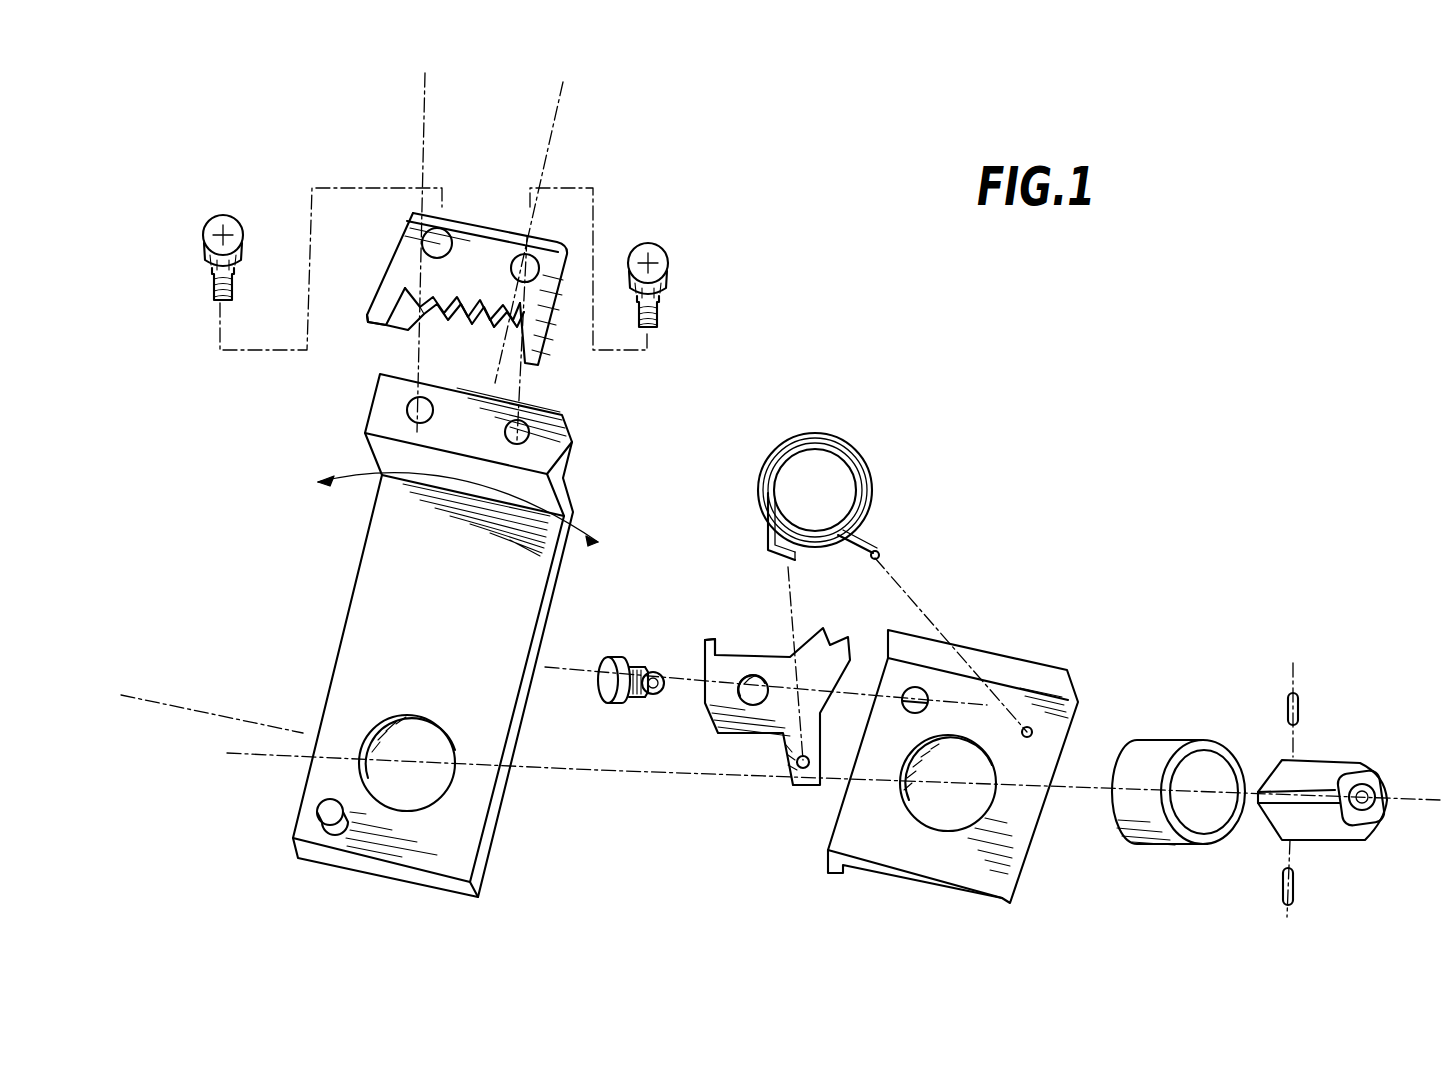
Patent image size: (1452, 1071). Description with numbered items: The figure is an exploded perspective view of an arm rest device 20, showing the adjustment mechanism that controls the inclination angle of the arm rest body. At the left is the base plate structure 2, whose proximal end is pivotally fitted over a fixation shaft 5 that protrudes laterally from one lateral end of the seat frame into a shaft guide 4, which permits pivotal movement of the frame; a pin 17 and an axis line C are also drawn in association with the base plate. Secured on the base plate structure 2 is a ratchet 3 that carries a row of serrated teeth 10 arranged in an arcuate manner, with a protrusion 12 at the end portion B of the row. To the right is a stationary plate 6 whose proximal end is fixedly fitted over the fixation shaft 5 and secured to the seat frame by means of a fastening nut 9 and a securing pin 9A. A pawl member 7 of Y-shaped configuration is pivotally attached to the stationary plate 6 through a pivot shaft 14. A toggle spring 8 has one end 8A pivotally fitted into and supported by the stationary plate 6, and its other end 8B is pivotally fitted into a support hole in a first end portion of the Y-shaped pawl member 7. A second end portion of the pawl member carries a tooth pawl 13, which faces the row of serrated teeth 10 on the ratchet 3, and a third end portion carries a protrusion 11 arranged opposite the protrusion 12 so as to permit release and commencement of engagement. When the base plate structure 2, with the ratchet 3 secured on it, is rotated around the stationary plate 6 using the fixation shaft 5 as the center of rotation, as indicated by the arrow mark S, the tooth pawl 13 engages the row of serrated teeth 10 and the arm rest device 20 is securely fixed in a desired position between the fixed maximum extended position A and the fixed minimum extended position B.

The base plate structure 2 is at (394, 635).
The ratchet 3 is at (480, 280).
The shaft guide 4 is at (1217, 752).
The fixation shaft 5 is at (1337, 783).
The stationary plate 6 is at (1023, 705).
The pawl member 7 is at (857, 667).
The toggle spring 8 is at (854, 492).
The one end of toggle spring 8A is at (875, 543).
The other end of toggle spring 8B is at (795, 558).
The fastening nut 9 is at (1372, 820).
The securing pin 9A is at (1298, 702).
The row of serrated teeth 10 is at (457, 290).
The protrusion 11 is at (712, 640).
The protrusion 12 is at (380, 327).
The tooth pawl 13 is at (855, 647).
The pivot shaft 14 is at (612, 657).
The pin 17 is at (322, 815).
The arm rest device 20 is at (1028, 400).
The maximum extended position A is at (555, 120).
The minimum extended position B is at (425, 127).
The axis C is at (153, 700).
The arrow mark S is at (483, 487).